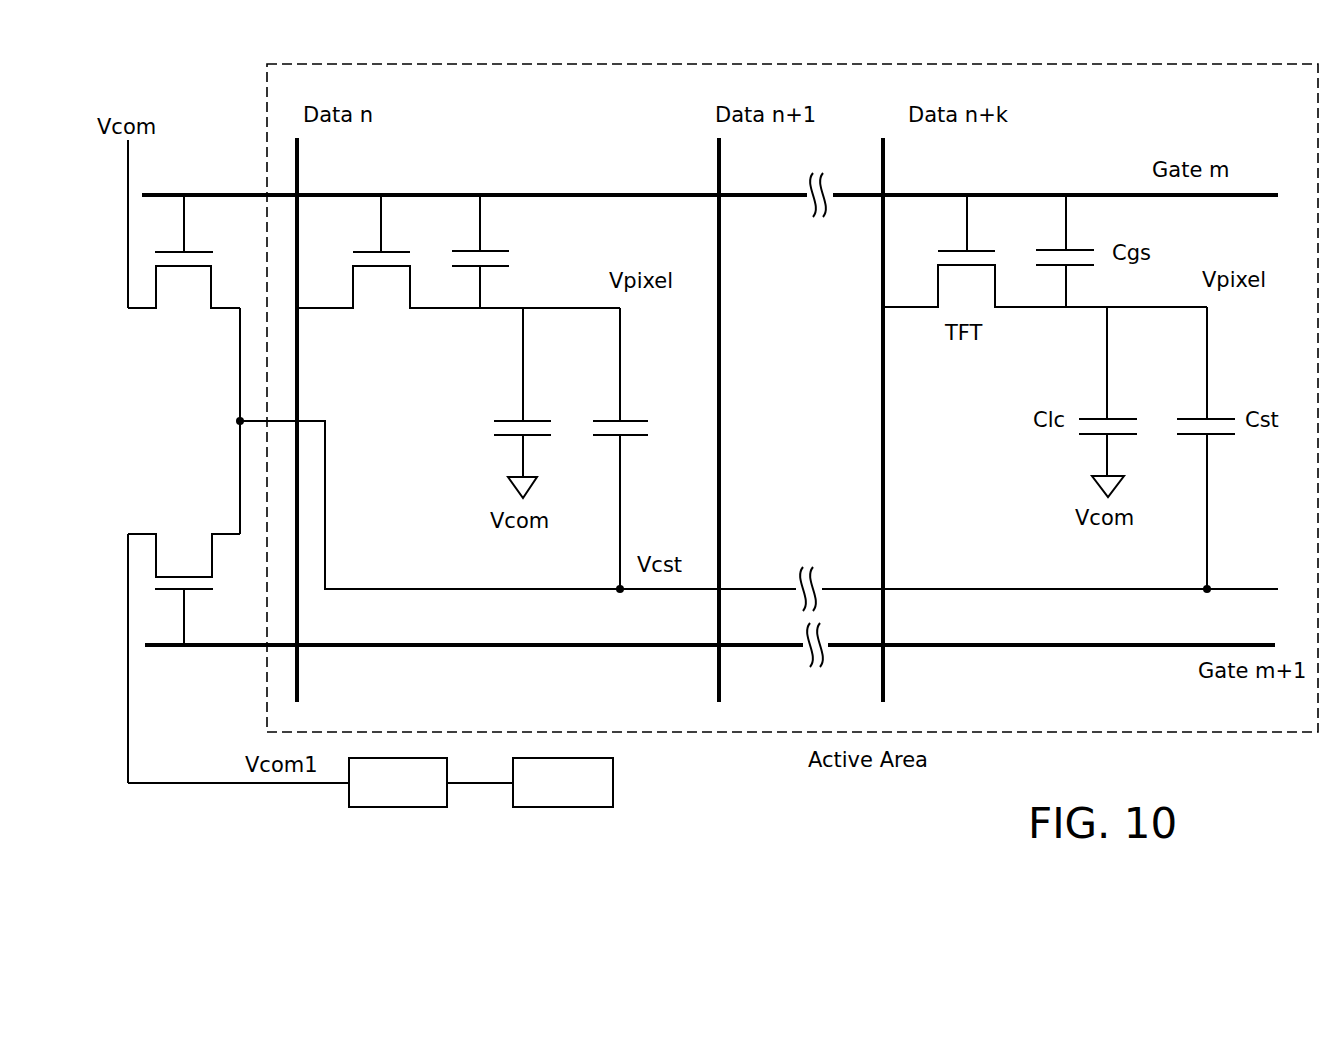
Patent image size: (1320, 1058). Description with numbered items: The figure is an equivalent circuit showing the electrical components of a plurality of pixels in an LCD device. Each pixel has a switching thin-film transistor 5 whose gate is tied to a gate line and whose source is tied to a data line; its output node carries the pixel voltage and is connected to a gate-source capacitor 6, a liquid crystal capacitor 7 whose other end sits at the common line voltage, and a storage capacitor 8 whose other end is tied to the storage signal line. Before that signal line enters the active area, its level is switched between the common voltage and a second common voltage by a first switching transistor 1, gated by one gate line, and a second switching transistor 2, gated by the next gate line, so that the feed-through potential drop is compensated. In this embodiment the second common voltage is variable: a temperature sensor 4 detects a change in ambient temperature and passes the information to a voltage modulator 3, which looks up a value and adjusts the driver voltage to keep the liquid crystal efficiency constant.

The TFT A 1 is at (184, 273).
The TFT B 2 is at (184, 570).
The voltage modulator 3 is at (398, 814).
The temperature sensor 4 is at (585, 814).
The pixel TFT 5 is at (458, 270).
The gate-source capacitor Cgs 6 is at (509, 251).
The liquid crystal capacitor Clc 7 is at (500, 403).
The storage capacitor Cst 8 is at (643, 450).